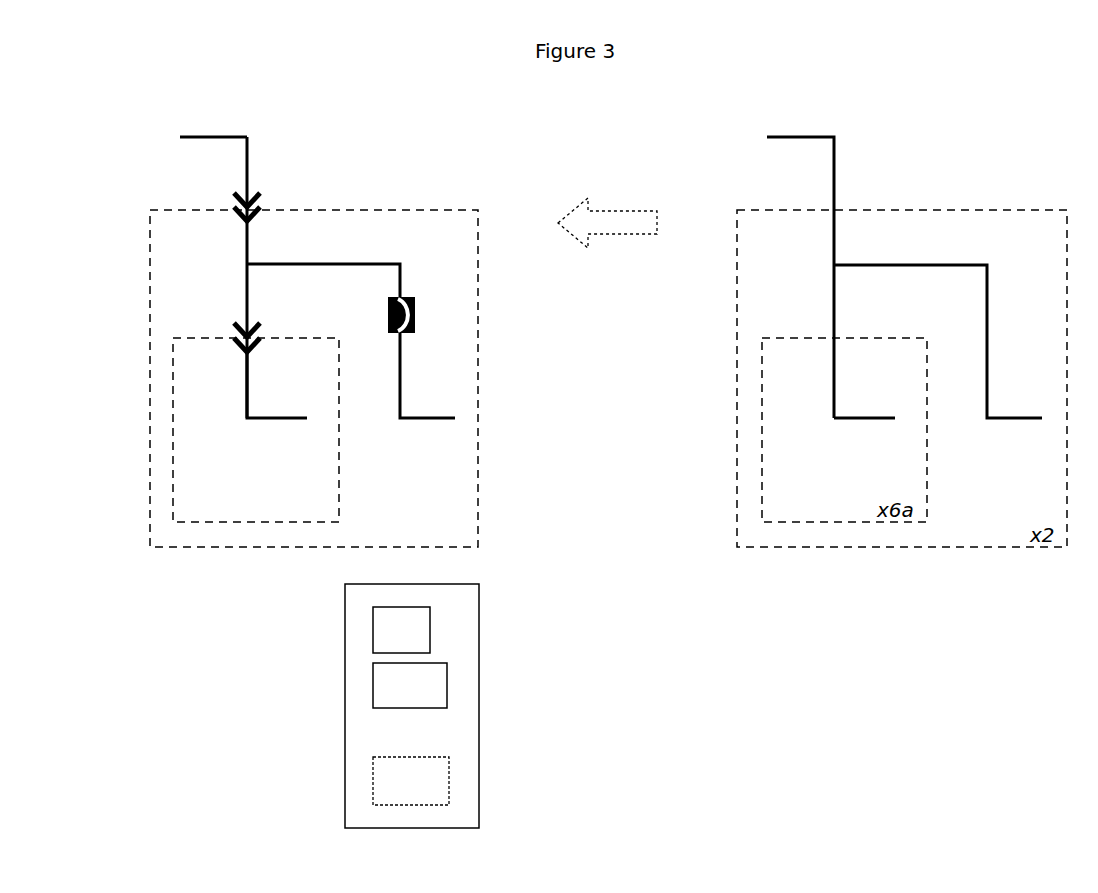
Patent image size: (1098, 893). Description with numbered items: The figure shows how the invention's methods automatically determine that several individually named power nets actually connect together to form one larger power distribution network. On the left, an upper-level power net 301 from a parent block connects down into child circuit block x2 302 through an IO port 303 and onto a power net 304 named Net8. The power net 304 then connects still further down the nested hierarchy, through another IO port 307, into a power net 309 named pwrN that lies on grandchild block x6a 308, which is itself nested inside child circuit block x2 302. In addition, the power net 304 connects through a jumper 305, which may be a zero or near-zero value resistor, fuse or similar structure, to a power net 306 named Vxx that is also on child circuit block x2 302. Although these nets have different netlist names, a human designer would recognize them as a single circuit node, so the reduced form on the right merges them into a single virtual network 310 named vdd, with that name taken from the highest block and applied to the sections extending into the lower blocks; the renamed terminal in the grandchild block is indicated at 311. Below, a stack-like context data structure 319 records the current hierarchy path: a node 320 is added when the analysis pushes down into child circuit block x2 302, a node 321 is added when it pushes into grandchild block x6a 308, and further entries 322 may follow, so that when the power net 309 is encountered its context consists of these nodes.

The upper-level power net 301 is at (216, 113).
The child circuit block x2 302 is at (502, 530).
The IO port 303 is at (282, 197).
The power net 304 is at (223, 280).
The jumper 305 is at (440, 313).
The power net 306 is at (424, 357).
The IO port 307 is at (220, 327).
The child block x6a 308 is at (362, 507).
The power net 309 is at (223, 385).
The single virtual network 310 is at (859, 163).
The vdd terminal 311 is at (850, 432).
The context data structure 319 is at (322, 705).
The node 320 is at (452, 630).
The node 321 is at (469, 686).
The additional cell entry 322 is at (471, 780).